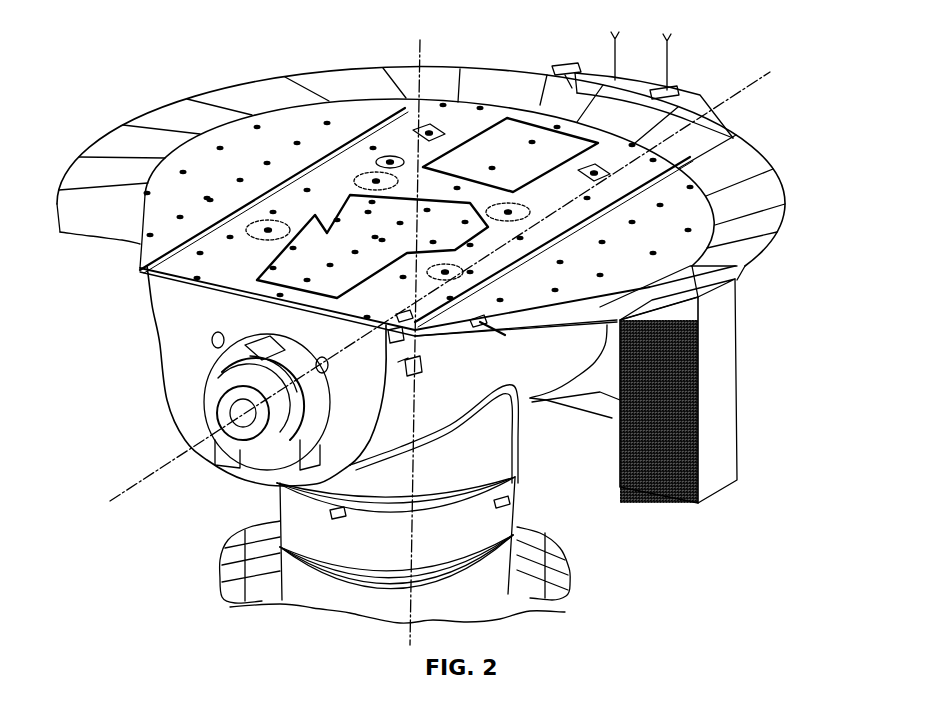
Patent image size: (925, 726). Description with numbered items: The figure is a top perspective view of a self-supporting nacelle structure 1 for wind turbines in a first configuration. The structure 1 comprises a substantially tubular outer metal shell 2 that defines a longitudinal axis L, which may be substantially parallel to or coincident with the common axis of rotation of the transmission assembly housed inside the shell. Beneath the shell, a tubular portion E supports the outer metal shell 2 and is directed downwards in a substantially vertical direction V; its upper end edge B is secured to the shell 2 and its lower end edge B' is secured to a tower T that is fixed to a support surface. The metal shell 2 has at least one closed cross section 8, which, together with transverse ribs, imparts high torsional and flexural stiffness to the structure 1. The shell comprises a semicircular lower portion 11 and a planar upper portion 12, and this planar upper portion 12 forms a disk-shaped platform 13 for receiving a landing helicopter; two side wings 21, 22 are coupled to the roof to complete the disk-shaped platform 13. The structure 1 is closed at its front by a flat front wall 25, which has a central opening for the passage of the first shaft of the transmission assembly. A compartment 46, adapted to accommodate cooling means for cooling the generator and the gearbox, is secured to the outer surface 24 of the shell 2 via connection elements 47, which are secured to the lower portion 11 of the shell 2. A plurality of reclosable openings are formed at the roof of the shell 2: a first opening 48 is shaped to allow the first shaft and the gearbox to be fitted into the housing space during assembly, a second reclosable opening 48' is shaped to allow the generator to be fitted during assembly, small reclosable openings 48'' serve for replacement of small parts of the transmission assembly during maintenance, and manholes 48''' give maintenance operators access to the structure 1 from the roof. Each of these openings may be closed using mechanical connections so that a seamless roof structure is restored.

The nacelle structure 1 is at (802, 172).
The outer metal shell 2 is at (160, 336).
The closed cross section 8 is at (370, 452).
The semicircular lower portion 11 is at (560, 371).
The planar upper portion 12 is at (270, 291).
The disk-shaped platform 13 is at (496, 92).
The side wing 21 is at (712, 219).
The side wing 22 is at (206, 150).
The outer surface 24 is at (390, 406).
The front wall 25 is at (199, 329).
The compartment 46 is at (716, 487).
The connection elements 47 is at (603, 485).
The first opening 48 is at (372, 246).
The second reclosable opening 48' is at (510, 155).
The small reclosable openings 48'' is at (388, 225).
The manholes 48''' is at (469, 129).
The vertical direction V is at (418, 51).
The longitudinal axis L is at (132, 493).
The upper end edge B is at (396, 457).
The lower end edge B' is at (396, 562).
The tubular portion E is at (497, 527).
The tower T is at (576, 602).